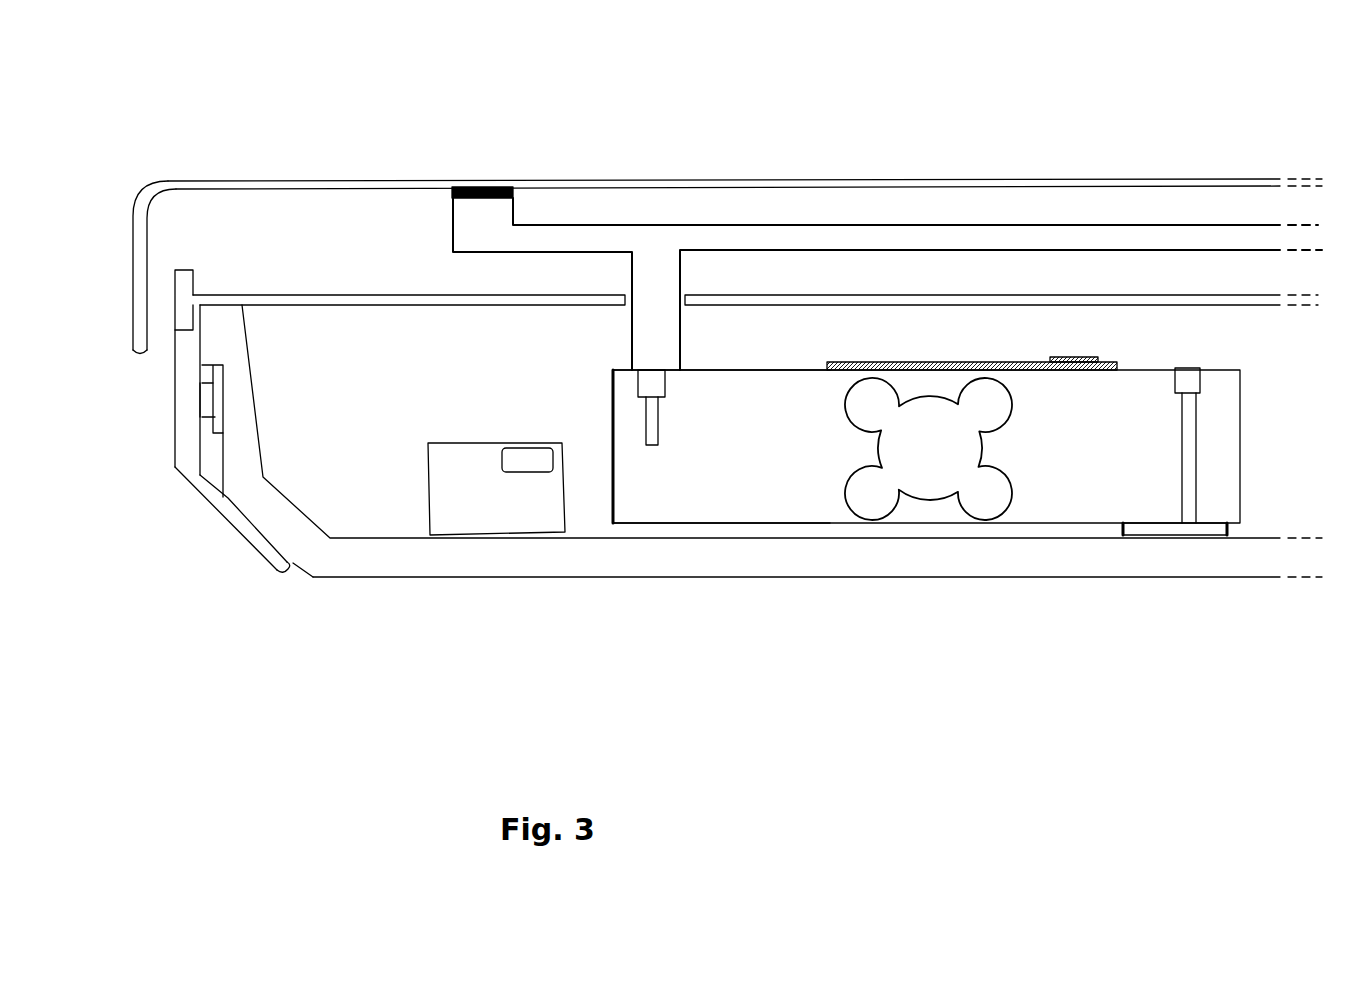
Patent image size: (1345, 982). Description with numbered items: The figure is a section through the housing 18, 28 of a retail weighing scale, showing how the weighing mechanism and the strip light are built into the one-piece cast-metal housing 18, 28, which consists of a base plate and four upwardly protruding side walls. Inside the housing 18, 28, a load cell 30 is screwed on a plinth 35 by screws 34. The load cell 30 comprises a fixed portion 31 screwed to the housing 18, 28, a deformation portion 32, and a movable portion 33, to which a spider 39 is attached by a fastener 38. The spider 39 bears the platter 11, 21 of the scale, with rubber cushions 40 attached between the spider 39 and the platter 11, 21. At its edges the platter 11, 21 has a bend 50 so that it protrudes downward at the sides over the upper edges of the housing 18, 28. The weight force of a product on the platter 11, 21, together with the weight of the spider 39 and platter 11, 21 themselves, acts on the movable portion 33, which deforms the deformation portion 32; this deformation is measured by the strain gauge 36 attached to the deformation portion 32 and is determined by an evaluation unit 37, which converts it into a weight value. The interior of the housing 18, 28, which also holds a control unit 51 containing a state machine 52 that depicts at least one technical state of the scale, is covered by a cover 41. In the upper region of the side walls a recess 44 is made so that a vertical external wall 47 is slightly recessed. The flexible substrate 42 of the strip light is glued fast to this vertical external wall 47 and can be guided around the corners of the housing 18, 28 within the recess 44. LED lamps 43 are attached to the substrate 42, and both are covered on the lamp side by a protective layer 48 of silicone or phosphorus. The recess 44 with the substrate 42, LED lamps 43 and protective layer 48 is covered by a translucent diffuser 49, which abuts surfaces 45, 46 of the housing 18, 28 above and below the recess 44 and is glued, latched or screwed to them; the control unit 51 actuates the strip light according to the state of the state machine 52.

The platter 11 is at (745, 141).
The platter 21 is at (375, 182).
The housing 18 is at (782, 498).
The housing 28 is at (605, 558).
The load cell 30 is at (894, 398).
The fixed portion 31 is at (1090, 500).
The deformation portion 32 is at (923, 512).
The movable portion 33 is at (730, 497).
The screws 34 is at (1187, 475).
The plinth 35 is at (1175, 527).
The strain gauge 36 is at (985, 362).
The evaluation unit 37 is at (1075, 357).
The fastener 38 is at (655, 388).
The spider 39 is at (658, 250).
The rubber cushions 40 is at (505, 188).
The cover 41 is at (810, 298).
The substrate 42 is at (220, 380).
The LED lamps 43 is at (207, 397).
The recess 44 is at (230, 597).
The surface 45 is at (295, 572).
The surface 46 is at (207, 322).
The vertical external wall 47 is at (225, 440).
The protective layer 48 is at (198, 416).
The diffuser 49 is at (243, 530).
The bend 50 is at (721, 222).
The control unit 51 is at (460, 510).
The state machine 52 is at (525, 460).